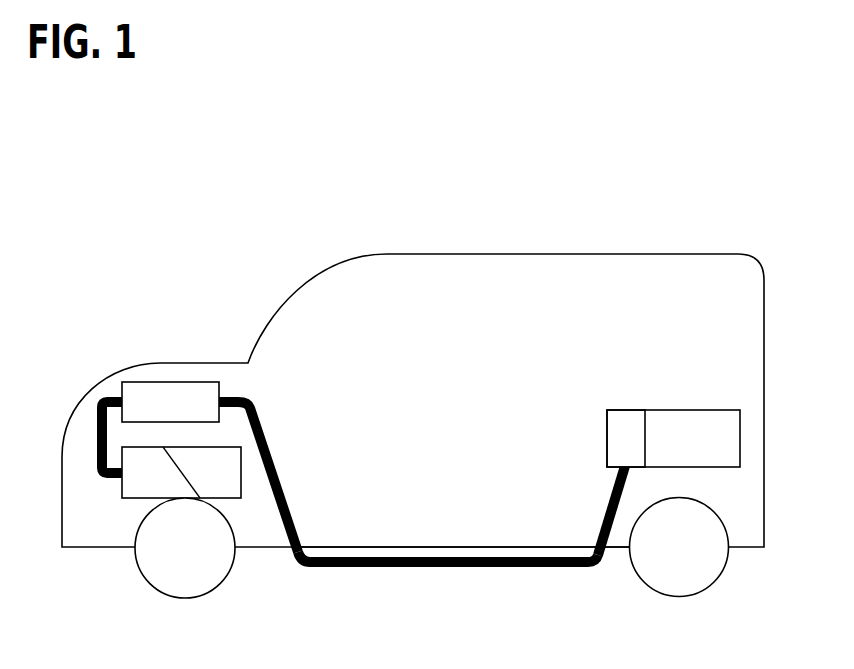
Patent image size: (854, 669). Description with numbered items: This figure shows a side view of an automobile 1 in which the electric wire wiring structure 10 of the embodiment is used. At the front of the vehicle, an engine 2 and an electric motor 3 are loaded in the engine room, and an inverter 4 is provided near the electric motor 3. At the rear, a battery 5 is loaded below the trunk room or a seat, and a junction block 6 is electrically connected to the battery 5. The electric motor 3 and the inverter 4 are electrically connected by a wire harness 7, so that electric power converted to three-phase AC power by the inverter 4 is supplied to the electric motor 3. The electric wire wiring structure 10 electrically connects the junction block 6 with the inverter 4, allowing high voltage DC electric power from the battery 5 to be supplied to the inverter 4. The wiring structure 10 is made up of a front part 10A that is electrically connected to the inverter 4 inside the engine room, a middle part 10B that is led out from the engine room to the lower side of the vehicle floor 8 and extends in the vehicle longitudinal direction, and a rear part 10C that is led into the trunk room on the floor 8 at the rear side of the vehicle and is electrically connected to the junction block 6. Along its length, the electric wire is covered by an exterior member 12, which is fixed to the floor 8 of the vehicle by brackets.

The automobile 1 is at (188, 284).
The engine 2 is at (219, 478).
The electric motor 3 is at (133, 480).
The inverter 4 is at (147, 395).
The battery 5 is at (693, 425).
The junction block 6 is at (622, 425).
The wire harness 7 is at (96, 432).
The floor 8 is at (543, 548).
The electric wire wiring structure 10 is at (314, 534).
The front part 10A is at (276, 466).
The middle part 10B is at (457, 570).
The rear part 10C is at (613, 488).
The exterior member 12 is at (335, 570).